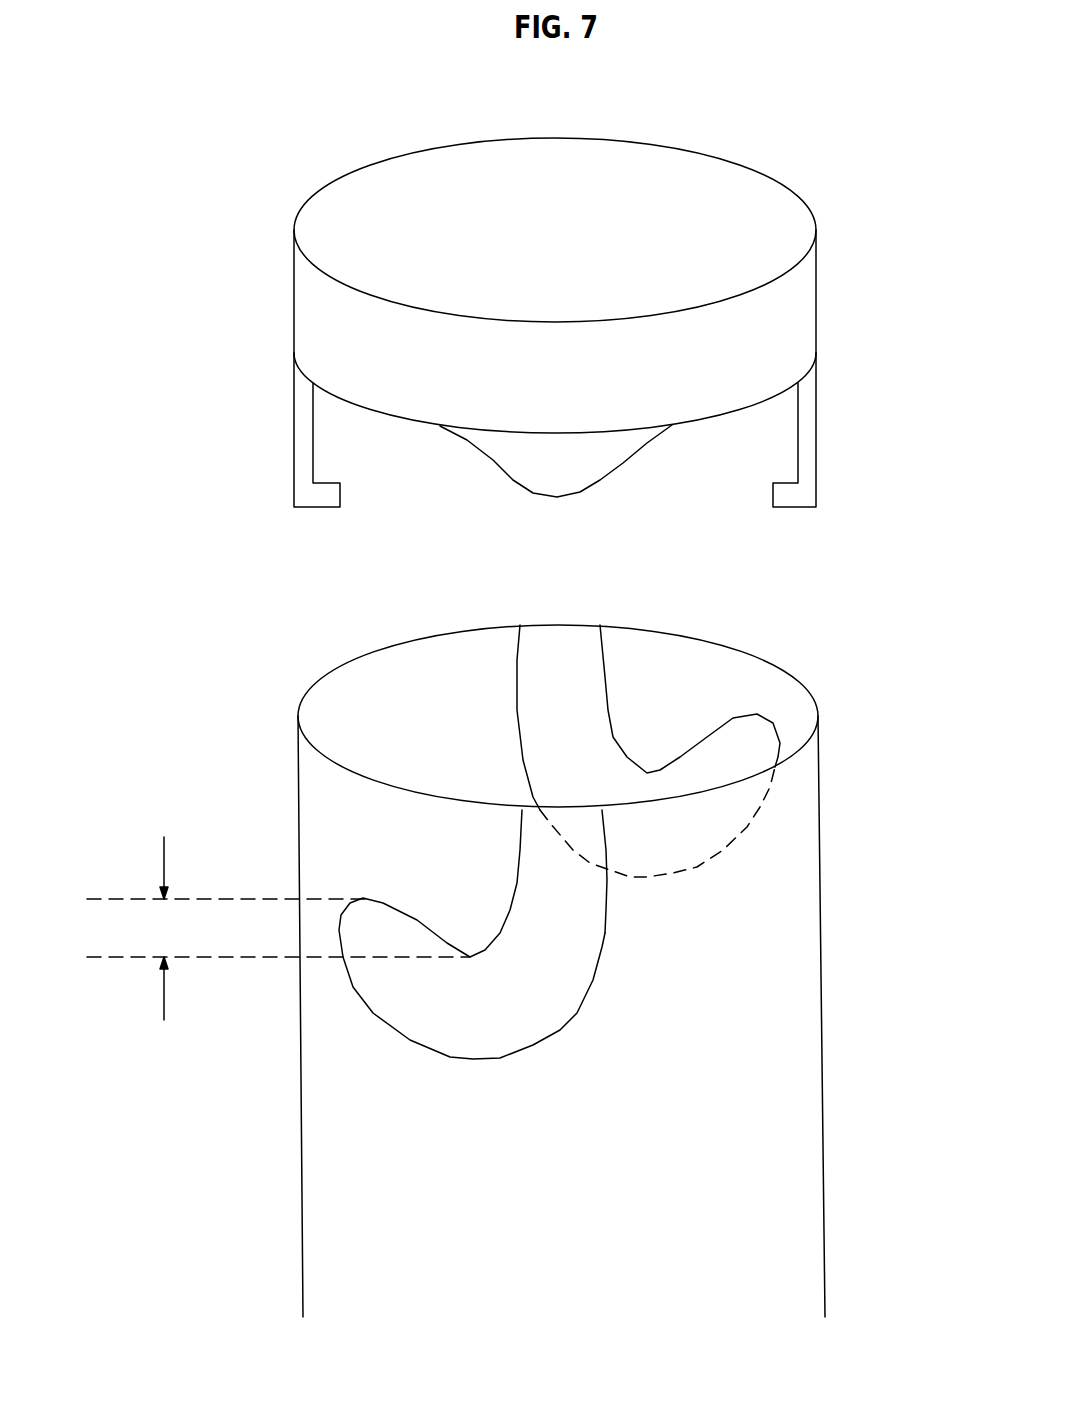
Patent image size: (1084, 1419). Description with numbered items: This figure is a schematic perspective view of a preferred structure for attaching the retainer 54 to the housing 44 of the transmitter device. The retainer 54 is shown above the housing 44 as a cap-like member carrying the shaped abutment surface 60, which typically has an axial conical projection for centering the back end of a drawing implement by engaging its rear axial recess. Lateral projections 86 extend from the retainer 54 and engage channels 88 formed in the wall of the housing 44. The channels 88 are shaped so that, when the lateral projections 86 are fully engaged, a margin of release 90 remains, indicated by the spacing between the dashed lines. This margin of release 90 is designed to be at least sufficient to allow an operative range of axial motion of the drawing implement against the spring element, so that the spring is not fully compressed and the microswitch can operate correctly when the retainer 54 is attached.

The retainer 54 is at (627, 285).
The abutment surface 60 is at (700, 443).
The lateral projections 86 is at (558, 453).
The housing 44 is at (631, 971).
The channels 88 is at (652, 842).
The margin of release 90 is at (278, 928).